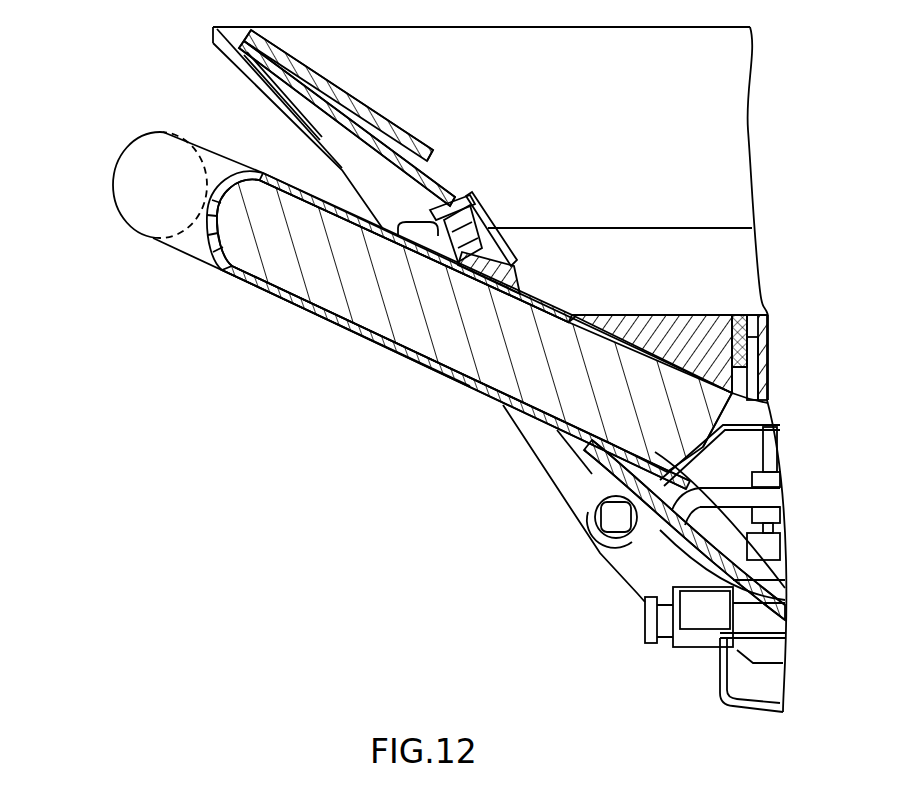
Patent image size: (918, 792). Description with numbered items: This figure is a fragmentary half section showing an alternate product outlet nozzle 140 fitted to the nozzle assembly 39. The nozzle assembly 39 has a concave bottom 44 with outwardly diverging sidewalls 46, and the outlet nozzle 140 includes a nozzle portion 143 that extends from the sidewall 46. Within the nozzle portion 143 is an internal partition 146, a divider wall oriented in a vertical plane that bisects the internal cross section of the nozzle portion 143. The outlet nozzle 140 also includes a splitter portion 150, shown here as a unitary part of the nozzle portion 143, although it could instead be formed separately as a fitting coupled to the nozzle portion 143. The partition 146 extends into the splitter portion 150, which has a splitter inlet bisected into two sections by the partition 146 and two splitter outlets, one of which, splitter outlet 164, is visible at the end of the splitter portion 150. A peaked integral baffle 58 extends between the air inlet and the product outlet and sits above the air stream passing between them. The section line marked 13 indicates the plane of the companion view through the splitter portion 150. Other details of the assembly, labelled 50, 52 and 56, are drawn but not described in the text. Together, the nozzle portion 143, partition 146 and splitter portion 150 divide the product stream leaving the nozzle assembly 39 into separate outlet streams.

The section line 13- 13 is at (156, 183).
The nozzle assembly 39 is at (522, 495).
The concave bottom 44 is at (650, 574).
The sidewall 46 is at (459, 201).
The fastener 50 is at (663, 638).
The bracket 52 is at (777, 672).
The curved guide 56 is at (668, 544).
The baffle 58 is at (657, 314).
The product outlet nozzle 140 is at (305, 345).
The nozzle portion 143 is at (410, 364).
The internal partition 146 is at (475, 358).
The splitter portion 150 is at (265, 172).
The splitter outlet 164 is at (133, 142).